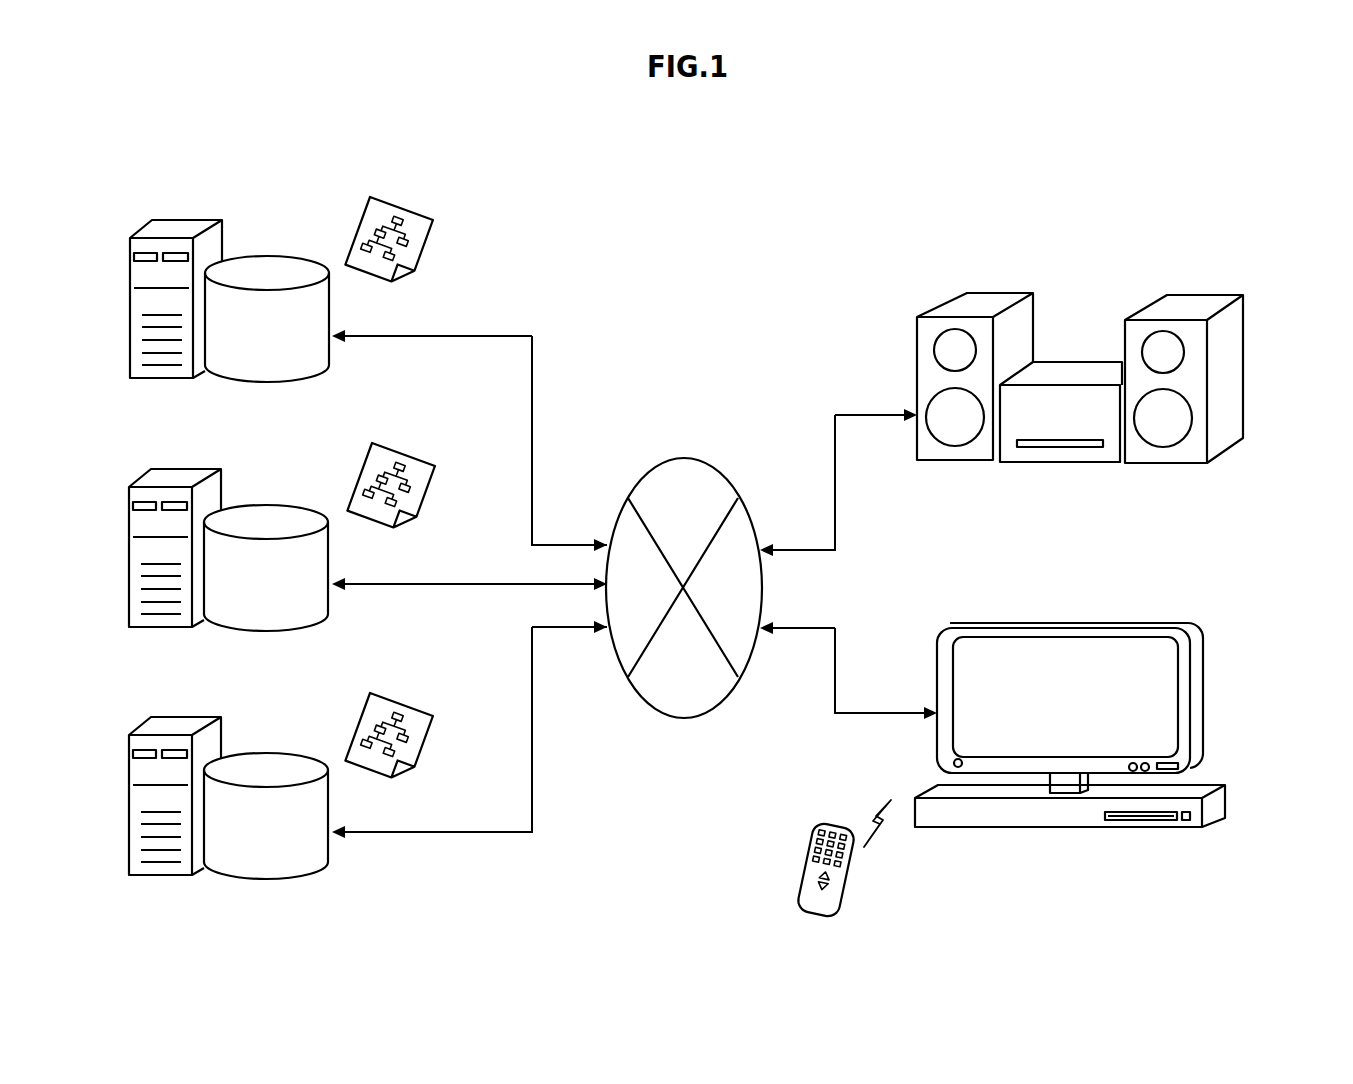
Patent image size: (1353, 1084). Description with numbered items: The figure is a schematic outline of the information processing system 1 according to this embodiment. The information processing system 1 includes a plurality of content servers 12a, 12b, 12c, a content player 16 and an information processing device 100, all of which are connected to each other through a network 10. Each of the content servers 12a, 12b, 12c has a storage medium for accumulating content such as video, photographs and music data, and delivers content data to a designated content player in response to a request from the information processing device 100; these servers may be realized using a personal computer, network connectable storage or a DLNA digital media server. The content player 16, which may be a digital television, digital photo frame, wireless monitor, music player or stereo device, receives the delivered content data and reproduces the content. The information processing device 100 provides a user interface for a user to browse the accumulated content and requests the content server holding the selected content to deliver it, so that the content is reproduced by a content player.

The information processing system 1 is at (811, 187).
The network 10 is at (687, 457).
The content server 12a is at (187, 214).
The content server 12b is at (187, 463).
The content server 12c is at (187, 711).
The content player 16 is at (1187, 294).
The information processing device 100 is at (1137, 625).